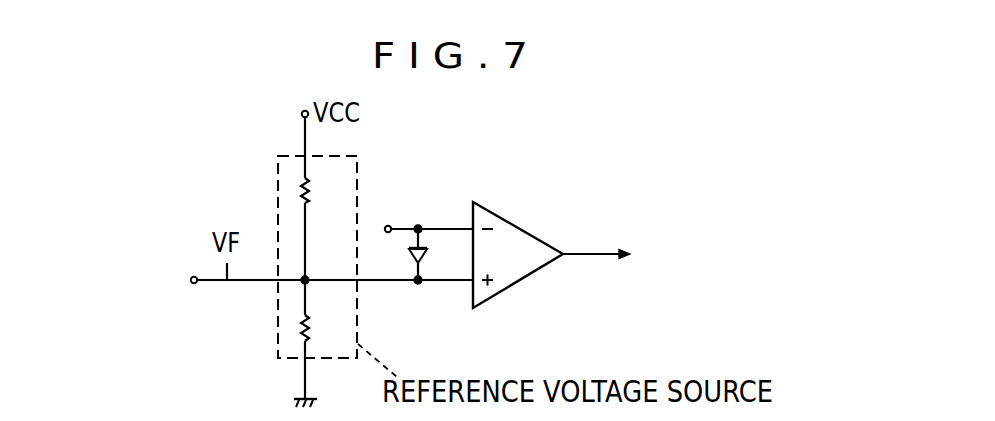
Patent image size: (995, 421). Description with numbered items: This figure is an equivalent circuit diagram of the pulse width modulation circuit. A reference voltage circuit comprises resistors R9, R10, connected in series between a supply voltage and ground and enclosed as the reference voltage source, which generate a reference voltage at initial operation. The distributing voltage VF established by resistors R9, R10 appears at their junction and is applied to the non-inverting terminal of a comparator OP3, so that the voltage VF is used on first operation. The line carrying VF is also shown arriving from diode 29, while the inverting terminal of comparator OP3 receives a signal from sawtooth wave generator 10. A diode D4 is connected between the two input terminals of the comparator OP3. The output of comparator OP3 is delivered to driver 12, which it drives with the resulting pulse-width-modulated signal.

The diode 29 is at (256, 265).
The sawtooth wave generator 10 is at (388, 226).
The driver 12 is at (679, 253).
The resistor R9 is at (323, 191).
The resistor R10 is at (327, 330).
The diode D4 is at (436, 254).
The comparator OP3 is at (518, 284).